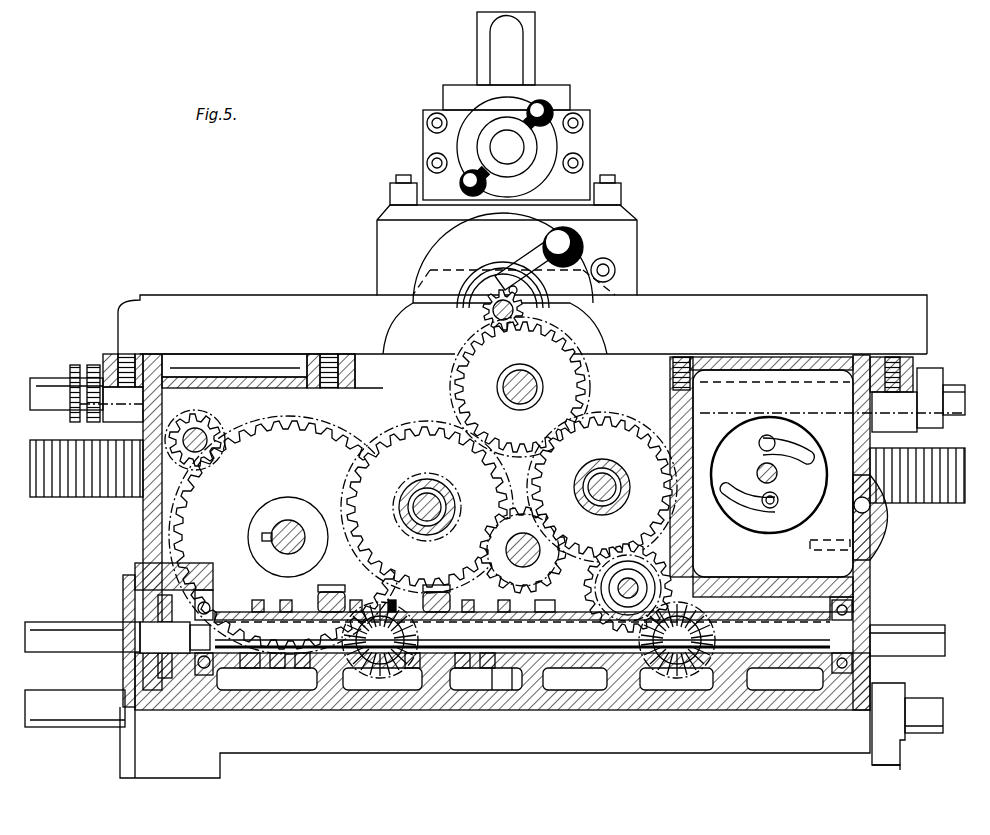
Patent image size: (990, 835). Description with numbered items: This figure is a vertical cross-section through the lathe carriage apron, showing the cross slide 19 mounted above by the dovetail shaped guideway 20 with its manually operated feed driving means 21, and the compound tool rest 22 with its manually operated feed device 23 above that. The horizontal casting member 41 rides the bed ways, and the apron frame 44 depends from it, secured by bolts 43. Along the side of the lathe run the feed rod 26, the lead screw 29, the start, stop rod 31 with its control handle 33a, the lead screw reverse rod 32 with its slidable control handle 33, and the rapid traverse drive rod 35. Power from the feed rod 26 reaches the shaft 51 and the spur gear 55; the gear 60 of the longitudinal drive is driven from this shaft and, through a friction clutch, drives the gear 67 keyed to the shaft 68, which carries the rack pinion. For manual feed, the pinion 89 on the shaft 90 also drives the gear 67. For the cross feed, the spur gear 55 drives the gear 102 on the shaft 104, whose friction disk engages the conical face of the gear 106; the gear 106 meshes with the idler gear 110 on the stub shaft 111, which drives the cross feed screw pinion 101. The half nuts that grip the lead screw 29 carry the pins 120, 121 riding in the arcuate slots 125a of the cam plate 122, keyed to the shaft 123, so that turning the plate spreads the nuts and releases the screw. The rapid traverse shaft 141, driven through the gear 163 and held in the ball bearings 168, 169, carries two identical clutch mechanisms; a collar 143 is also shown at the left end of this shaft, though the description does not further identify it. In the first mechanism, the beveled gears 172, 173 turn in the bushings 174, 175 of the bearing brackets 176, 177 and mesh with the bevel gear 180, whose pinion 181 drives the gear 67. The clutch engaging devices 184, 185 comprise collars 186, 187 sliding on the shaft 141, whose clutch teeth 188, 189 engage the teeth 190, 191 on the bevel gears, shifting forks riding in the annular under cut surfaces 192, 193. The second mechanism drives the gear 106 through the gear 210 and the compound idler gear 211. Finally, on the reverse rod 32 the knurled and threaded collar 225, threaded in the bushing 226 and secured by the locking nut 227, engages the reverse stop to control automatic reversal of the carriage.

The cross slide 19 is at (628, 250).
The dovetail shaped guideway 20 is at (579, 254).
The manually operated feed driving means 21 is at (513, 290).
The compound tool rest 22 is at (586, 143).
The manually operated feed device 23 is at (543, 102).
The feed rod 26 is at (93, 622).
The lead screw 29 is at (85, 497).
The start, stop rod 31 is at (90, 696).
The lead screw reverse rod 32 is at (32, 397).
The control handle 33 is at (932, 368).
The control handle 33a is at (898, 767).
The rapid traverse drive rod 35 is at (55, 727).
The casting member 41 is at (858, 309).
The bolts 43 is at (678, 356).
The apron frame 44 is at (143, 528).
The shaft 51 is at (474, 597).
The spur gear 55 is at (523, 510).
The gear 60 is at (427, 507).
The gear 67 is at (288, 535).
The shaft 68 is at (275, 530).
The pinion 89 is at (222, 435).
The shaft 90 is at (197, 426).
The cross feed screw pinion 101 is at (524, 311).
The gear 102 is at (562, 522).
The shaft 104 is at (612, 505).
The gear 106 is at (632, 478).
The idler gear 110 is at (586, 410).
The stub shaft 111 is at (532, 390).
The pin 120 is at (770, 437).
The pin 121 is at (772, 507).
The cam plate 122 is at (792, 499).
The shaft 123 is at (778, 477).
The arcuate slots 125a is at (810, 462).
The rapid traverse shaft 141 is at (236, 632).
The collar 143 is at (140, 655).
The gear 163 is at (158, 605).
The ball bearing 168 is at (204, 596).
The ball bearing 169 is at (876, 608).
The beveled gear 172 is at (356, 600).
The beveled gear 173 is at (404, 673).
The bushing 174 is at (334, 584).
The bushing 175 is at (444, 575).
The bearing bracket 176 is at (330, 591).
The bearing bracket 177 is at (430, 592).
The bevel gear 180 is at (380, 647).
The pinion 181 is at (403, 600).
The clutch engaging device 184 is at (252, 662).
The clutch engaging device 185 is at (512, 700).
The clutch collar 186 is at (270, 673).
The clutch collar 187 is at (492, 700).
The clutch teeth 188 is at (297, 597).
The clutch teeth 189 is at (486, 673).
The clutch teeth 190 is at (299, 673).
The clutch teeth 191 is at (462, 673).
The annular under cut surface 192 is at (269, 598).
The annular under cut surface 193 is at (504, 601).
The gear 210 is at (680, 688).
The compound idler gear 211 is at (646, 556).
The knurled and threaded collar 225 is at (73, 364).
The bushing 226 is at (111, 404).
The locking nut 227 is at (93, 364).